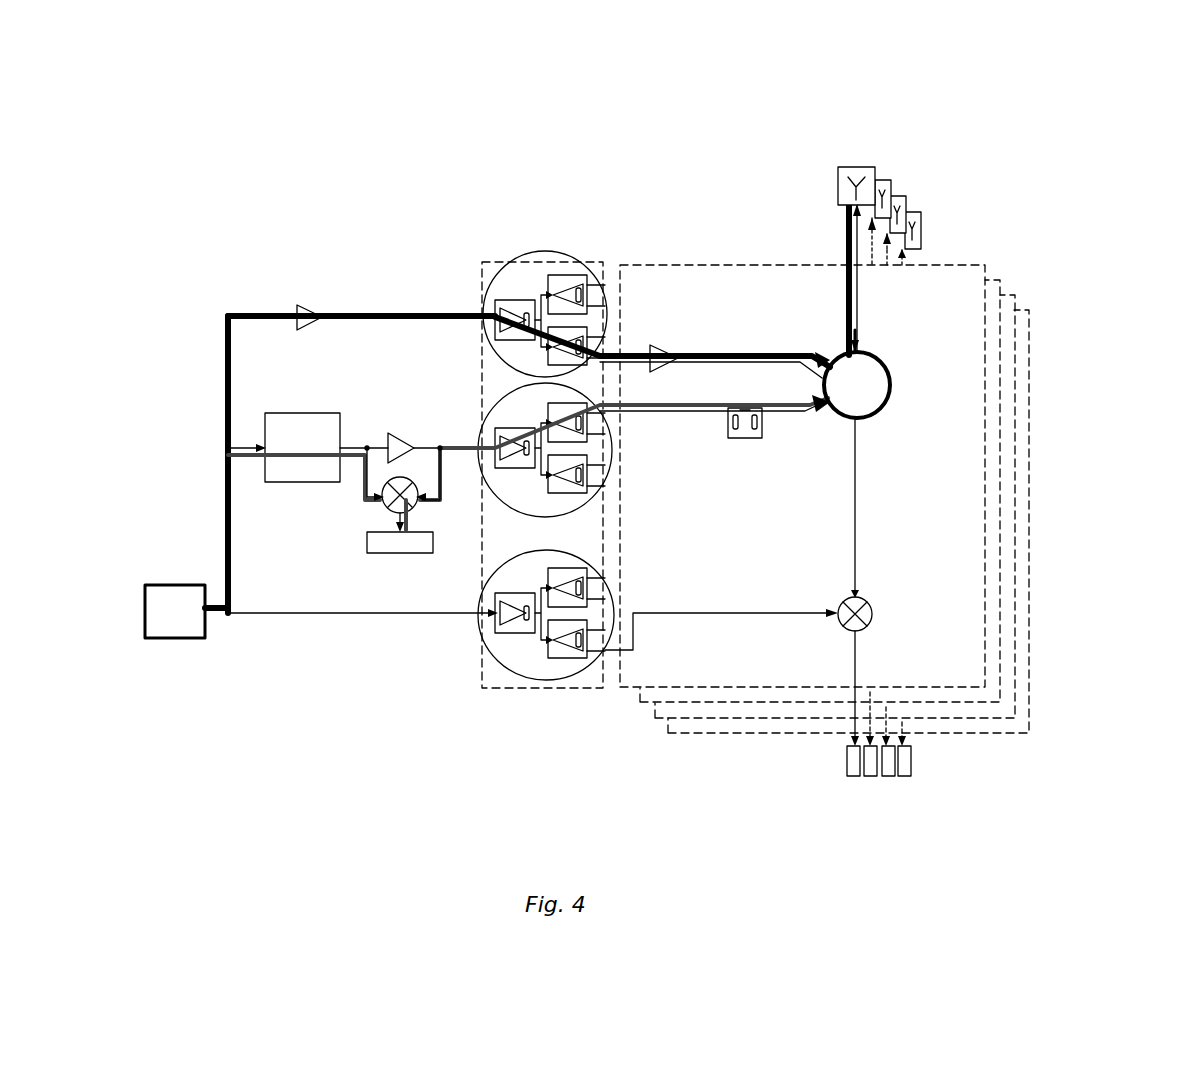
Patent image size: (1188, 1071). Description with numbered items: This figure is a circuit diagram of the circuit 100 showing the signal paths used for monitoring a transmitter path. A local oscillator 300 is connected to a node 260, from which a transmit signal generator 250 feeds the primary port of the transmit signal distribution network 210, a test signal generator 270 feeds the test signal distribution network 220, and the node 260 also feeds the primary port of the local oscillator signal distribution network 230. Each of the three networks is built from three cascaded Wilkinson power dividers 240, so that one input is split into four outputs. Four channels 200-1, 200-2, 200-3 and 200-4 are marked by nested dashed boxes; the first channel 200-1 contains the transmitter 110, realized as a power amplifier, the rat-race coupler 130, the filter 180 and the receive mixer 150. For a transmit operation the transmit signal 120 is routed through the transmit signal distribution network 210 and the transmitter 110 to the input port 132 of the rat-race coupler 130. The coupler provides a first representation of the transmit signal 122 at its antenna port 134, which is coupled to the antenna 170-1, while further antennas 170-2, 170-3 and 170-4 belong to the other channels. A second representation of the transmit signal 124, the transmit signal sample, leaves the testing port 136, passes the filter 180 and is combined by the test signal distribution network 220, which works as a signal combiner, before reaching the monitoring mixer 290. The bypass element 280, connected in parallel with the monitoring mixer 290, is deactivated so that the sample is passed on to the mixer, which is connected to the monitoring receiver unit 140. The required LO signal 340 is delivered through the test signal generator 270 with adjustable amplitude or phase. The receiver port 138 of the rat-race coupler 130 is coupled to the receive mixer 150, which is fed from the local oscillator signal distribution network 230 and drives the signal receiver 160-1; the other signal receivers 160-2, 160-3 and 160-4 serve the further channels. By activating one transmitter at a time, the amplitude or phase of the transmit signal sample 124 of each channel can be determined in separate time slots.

The circuit 100 is at (1133, 126).
The transmitter 110 is at (665, 350).
The transmit signal 120 is at (725, 354).
The first representation of transmit signal 122 is at (846, 232).
The second representation of transmit signal 124 is at (682, 412).
The coupler element 130 is at (890, 385).
The input port 132 is at (818, 352).
The antenna port 134 is at (862, 352).
The testing port 136 is at (820, 420).
The receiver port 138 is at (862, 420).
The monitoring receiver unit 140 is at (402, 554).
The receive mixer 150 is at (876, 614).
The signal receiver 160-1 is at (846, 760).
The further signal receiver 160-2 is at (868, 778).
The signal receiver 160-3 is at (890, 778).
The signal receiver 160-4 is at (912, 762).
The antenna 170-1 is at (846, 172).
The further antenna 170-2 is at (880, 180).
The antenna 170-3 is at (895, 196).
The antenna 170-4 is at (916, 212).
The filter 180 is at (740, 440).
The channel 200-1 is at (990, 300).
The channel 200-2 is at (1002, 382).
The channel 200-3 is at (1015, 477).
The channel 200-4 is at (1030, 540).
The transmit signal distribution network 210 is at (545, 252).
The test signal distribution network 220 is at (496, 412).
The local oscillator signal distribution network 230 is at (528, 690).
The Wilkinson power divider 240 is at (505, 290).
The transmit signal generator 250 is at (308, 305).
The node 260 is at (238, 616).
The test signal generator 270 is at (302, 413).
The bypass element 280 is at (400, 432).
The monitoring mixer 290 is at (384, 510).
The local oscillator 300 is at (165, 640).
The LO signal 340 is at (268, 458).